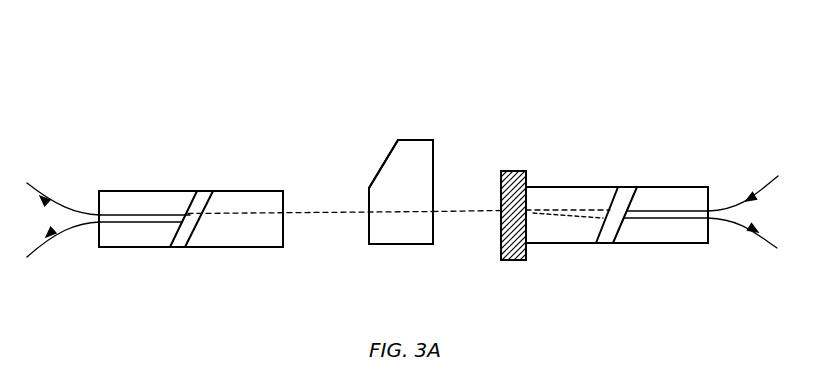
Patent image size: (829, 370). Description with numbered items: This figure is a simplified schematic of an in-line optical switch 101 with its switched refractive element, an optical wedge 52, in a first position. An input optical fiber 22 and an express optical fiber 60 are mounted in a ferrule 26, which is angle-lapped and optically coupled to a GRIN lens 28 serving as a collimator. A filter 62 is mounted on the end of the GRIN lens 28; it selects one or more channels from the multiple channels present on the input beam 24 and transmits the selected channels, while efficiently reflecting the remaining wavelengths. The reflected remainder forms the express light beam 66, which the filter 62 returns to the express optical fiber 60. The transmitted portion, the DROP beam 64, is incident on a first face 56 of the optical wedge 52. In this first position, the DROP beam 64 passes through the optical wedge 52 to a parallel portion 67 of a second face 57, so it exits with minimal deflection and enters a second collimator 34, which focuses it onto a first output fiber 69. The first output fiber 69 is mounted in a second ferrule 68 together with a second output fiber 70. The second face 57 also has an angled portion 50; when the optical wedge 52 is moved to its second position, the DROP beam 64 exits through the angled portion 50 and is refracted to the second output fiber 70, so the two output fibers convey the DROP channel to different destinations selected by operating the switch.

The optical switch 101 is at (686, 77).
The second collimator 34 is at (247, 190).
The second ferrule 68 is at (148, 190).
The first output fiber 69 is at (60, 203).
The second output fiber 70 is at (60, 232).
The second face 57 is at (360, 164).
The angled portion 50 is at (383, 160).
The optical wedge 52 is at (412, 139).
The parallel portion 67 is at (369, 228).
The first face 56 is at (433, 227).
The DROP beam 64 is at (460, 210).
The filter 62 is at (513, 170).
The GRIN lens 28 is at (560, 187).
The input beam 24 is at (597, 210).
The express light beam 66 is at (597, 217).
The ferrule 26 is at (680, 187).
The input optical fiber 22 is at (775, 178).
The express optical fiber 60 is at (773, 245).